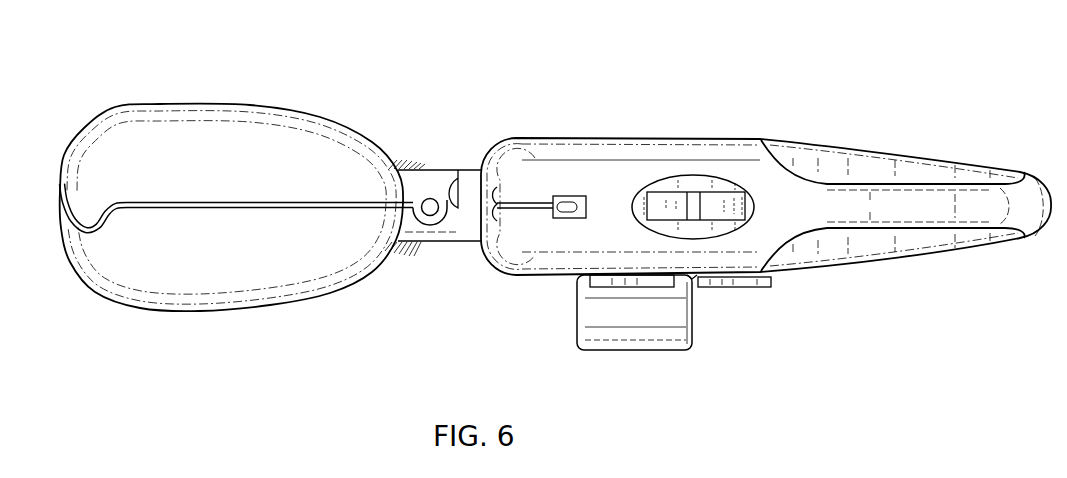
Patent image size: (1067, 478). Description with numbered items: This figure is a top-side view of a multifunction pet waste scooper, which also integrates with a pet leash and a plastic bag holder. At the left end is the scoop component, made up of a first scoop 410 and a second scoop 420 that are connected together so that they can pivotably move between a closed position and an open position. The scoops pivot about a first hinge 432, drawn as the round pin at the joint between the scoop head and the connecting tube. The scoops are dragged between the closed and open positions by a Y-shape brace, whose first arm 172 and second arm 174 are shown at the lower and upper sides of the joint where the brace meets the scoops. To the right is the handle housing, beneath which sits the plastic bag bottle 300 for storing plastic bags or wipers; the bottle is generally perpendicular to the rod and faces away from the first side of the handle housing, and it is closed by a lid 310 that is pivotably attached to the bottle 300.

The second scoop 420 is at (285, 157).
The first scoop 410 is at (277, 273).
The second arm 174 is at (405, 160).
The first arm 172 is at (402, 262).
The first hinge 432 is at (431, 204).
The plastic bag bottle 300 is at (613, 320).
The lid 310 is at (743, 283).